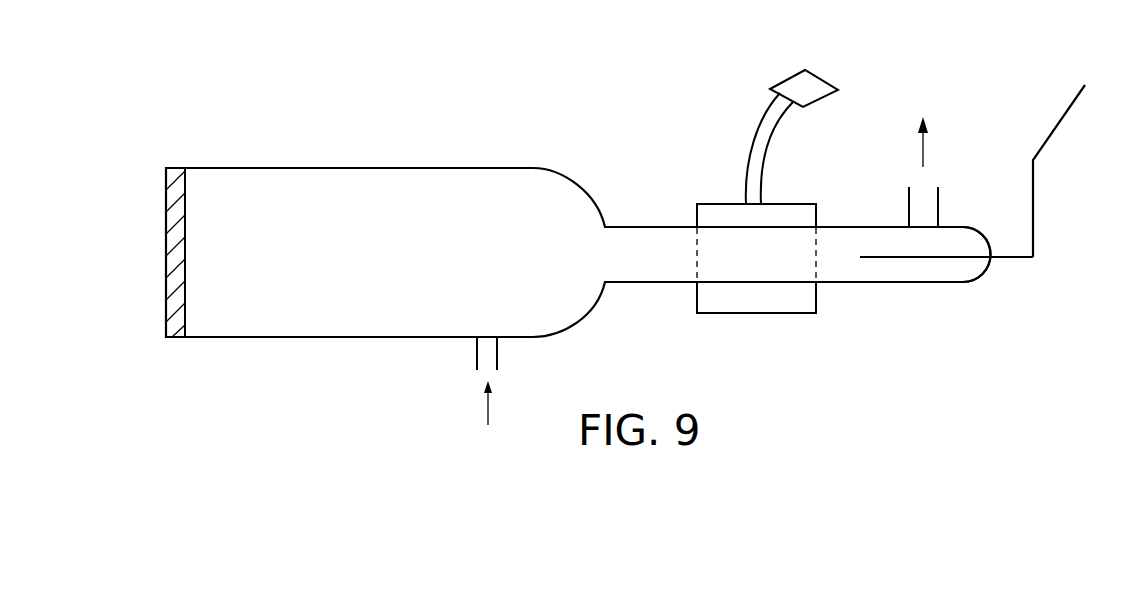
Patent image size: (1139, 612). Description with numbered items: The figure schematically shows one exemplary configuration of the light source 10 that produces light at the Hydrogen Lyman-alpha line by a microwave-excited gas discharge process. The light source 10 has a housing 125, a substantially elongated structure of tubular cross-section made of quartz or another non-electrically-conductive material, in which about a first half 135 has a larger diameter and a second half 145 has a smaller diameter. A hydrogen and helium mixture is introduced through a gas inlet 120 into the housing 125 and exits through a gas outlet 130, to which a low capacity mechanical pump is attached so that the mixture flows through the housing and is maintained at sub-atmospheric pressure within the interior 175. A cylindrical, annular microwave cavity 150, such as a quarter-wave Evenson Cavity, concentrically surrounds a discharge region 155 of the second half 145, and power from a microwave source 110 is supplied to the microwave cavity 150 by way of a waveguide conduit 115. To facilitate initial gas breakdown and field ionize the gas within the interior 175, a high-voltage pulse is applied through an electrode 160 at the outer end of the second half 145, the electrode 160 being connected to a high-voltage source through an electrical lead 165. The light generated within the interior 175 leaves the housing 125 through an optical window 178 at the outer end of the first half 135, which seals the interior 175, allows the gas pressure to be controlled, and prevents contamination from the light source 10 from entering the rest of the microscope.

The light source 10 is at (342, 112).
The microwave source 110 is at (815, 83).
The waveguide conduit 115 is at (760, 138).
The gas inlet 120 is at (476, 362).
The housing 125 is at (466, 168).
The gas outlet 130 is at (907, 210).
The first half 135 is at (261, 344).
The second half 145 is at (853, 297).
The microwave cavity 150 is at (752, 313).
The discharge region 155 is at (770, 271).
The electrode 160 is at (1010, 262).
The electrical lead 165 is at (1035, 215).
The interior 175 is at (388, 272).
The optical window 178 is at (174, 270).